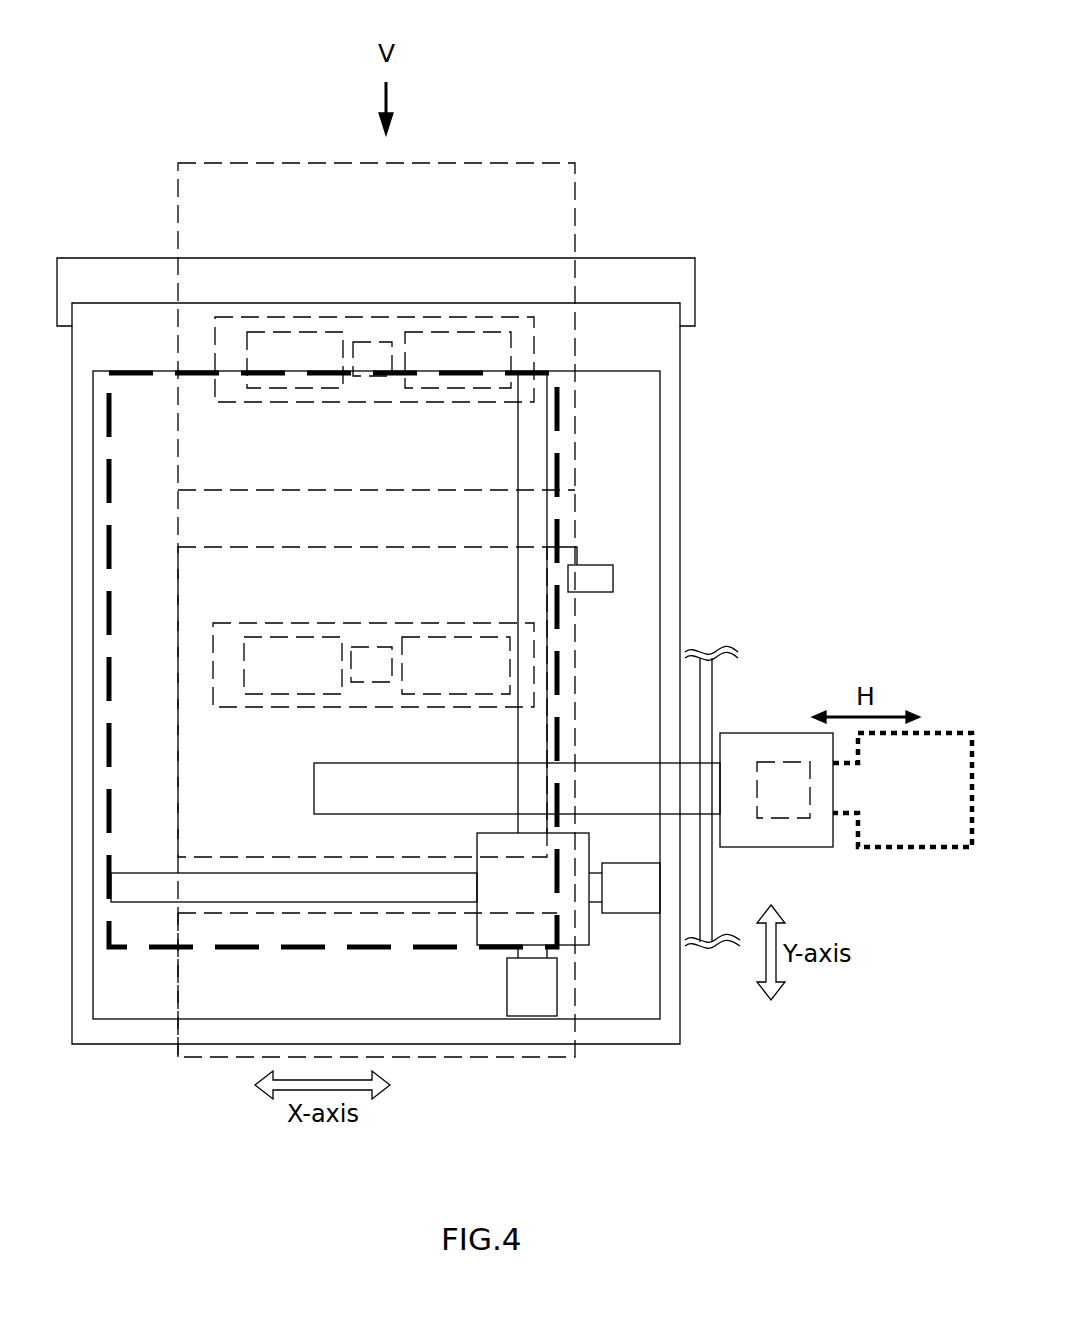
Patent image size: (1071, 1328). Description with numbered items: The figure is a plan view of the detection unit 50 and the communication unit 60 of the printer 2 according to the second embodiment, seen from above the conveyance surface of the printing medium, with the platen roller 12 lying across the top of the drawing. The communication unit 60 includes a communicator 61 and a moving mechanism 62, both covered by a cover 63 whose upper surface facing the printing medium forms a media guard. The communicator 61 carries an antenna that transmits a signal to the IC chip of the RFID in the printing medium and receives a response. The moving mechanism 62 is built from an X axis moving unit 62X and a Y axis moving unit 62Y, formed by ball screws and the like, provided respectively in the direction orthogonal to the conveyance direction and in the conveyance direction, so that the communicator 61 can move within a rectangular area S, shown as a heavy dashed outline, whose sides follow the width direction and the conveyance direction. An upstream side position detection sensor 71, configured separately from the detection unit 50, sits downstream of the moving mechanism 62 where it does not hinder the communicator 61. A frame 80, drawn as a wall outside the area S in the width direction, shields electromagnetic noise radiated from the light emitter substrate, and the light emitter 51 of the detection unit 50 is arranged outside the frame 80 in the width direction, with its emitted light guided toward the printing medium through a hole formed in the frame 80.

The printer 2 is at (622, 105).
The platen roller 12 is at (645, 258).
The communication unit 60 is at (195, 1068).
The cover 63 is at (677, 472).
The area S is at (558, 442).
The detection unit 50 is at (604, 760).
The upstream side position detection sensor 71 is at (613, 578).
The frame 80 is at (712, 870).
The light emitter 51 is at (781, 748).
The moving mechanism 62 is at (386, 995).
The communicator 61 is at (578, 903).
The X axis moving unit 62X is at (627, 903).
The Y axis moving unit 62Y is at (535, 1005).